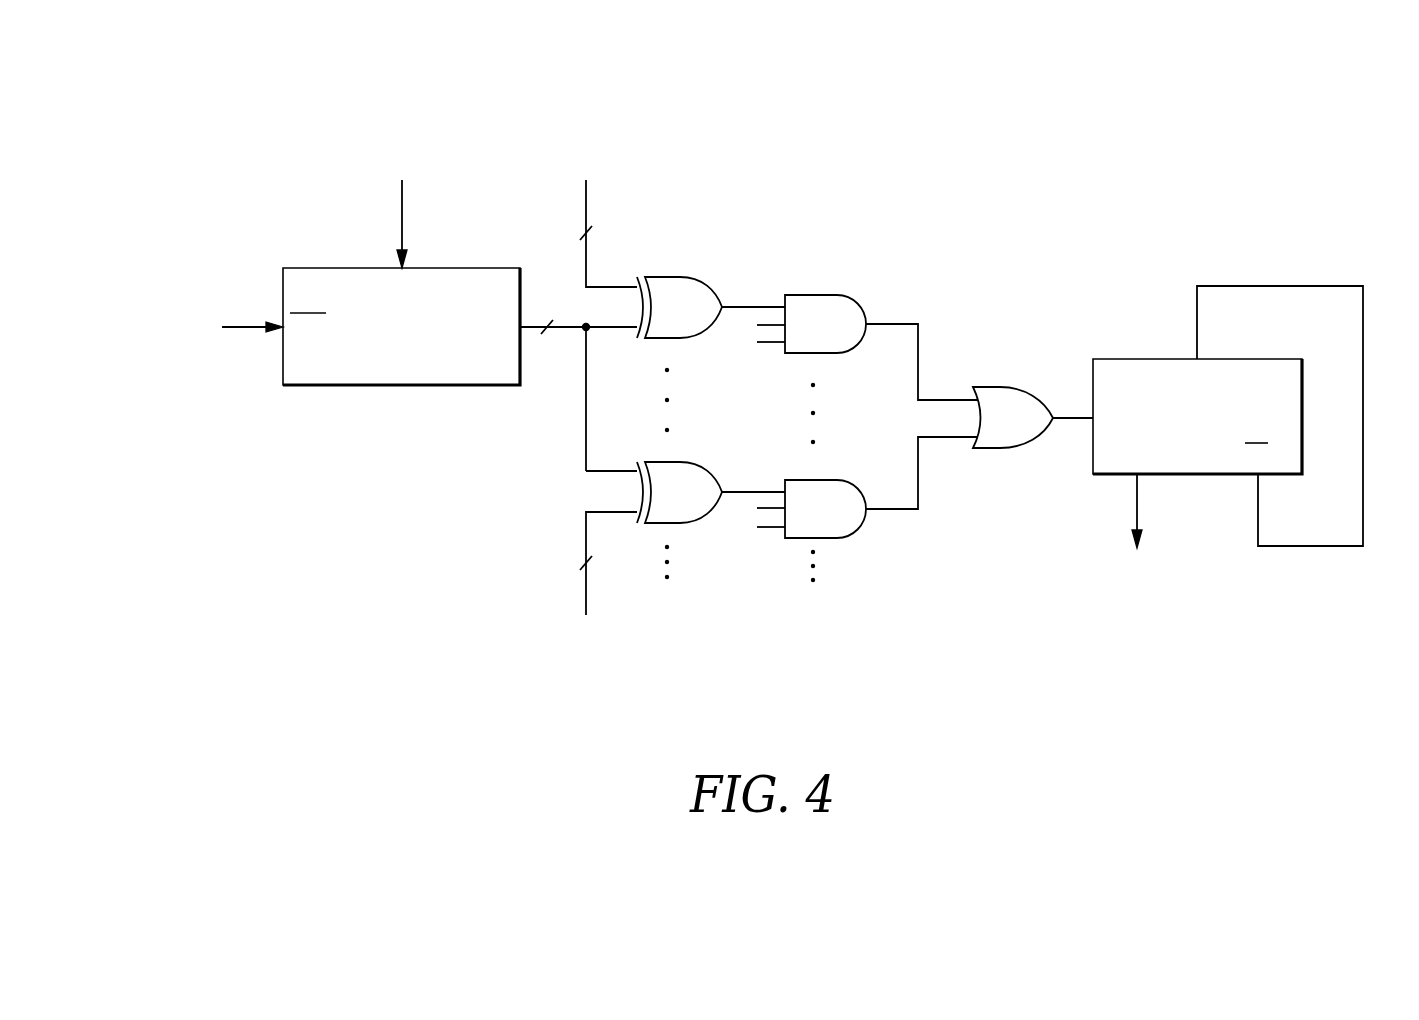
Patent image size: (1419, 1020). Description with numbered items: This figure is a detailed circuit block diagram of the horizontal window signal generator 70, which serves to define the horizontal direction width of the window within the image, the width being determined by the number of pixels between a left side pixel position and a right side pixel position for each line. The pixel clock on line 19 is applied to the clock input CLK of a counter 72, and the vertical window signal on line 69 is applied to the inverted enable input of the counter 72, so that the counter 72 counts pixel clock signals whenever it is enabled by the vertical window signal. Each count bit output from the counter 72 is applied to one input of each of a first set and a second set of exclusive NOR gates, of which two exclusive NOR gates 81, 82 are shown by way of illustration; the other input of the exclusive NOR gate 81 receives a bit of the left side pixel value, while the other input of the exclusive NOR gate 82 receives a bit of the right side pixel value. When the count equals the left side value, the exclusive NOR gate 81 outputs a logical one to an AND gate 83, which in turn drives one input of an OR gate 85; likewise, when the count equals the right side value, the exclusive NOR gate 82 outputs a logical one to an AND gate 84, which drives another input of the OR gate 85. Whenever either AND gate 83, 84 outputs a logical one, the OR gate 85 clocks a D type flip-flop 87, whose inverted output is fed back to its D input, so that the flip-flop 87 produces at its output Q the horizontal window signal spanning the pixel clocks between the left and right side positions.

The horizontal window signal generator 70 is at (1073, 206).
The line 19 is at (322, 266).
The line 69 is at (259, 331).
The counter 72 is at (496, 386).
The exclusive NOR gate 81 is at (700, 276).
The exclusive NOR gate 82 is at (706, 461).
The AND gate 83 is at (856, 298).
The AND gate 84 is at (878, 466).
The OR gate 85 is at (1010, 385).
The D type flip-flop 87 is at (1133, 357).